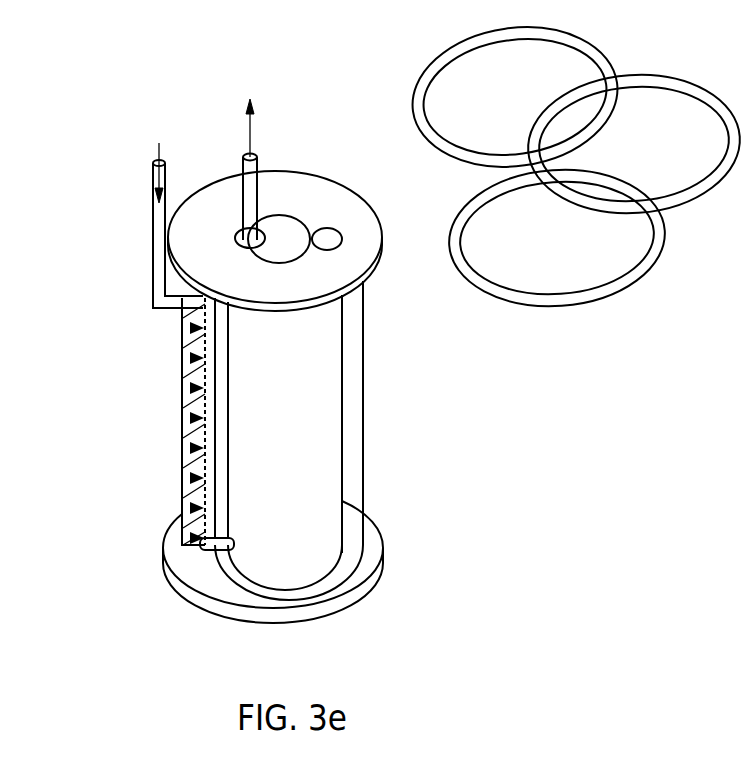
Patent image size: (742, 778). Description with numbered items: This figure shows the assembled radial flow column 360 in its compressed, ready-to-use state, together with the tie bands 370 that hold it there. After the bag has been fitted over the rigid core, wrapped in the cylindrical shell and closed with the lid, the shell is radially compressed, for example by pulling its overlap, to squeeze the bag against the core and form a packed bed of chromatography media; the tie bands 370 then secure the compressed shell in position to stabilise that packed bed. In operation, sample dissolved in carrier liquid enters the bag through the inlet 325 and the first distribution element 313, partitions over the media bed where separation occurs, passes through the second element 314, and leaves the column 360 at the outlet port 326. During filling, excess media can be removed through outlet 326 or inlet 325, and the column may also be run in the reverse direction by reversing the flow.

The radial flow column 360 is at (376, 377).
The tie bands 370 is at (624, 314).
The inlet 325 is at (152, 231).
The outlet port 326 is at (241, 197).
The first distribution element 313 is at (180, 441).
The second element 314 is at (200, 371).